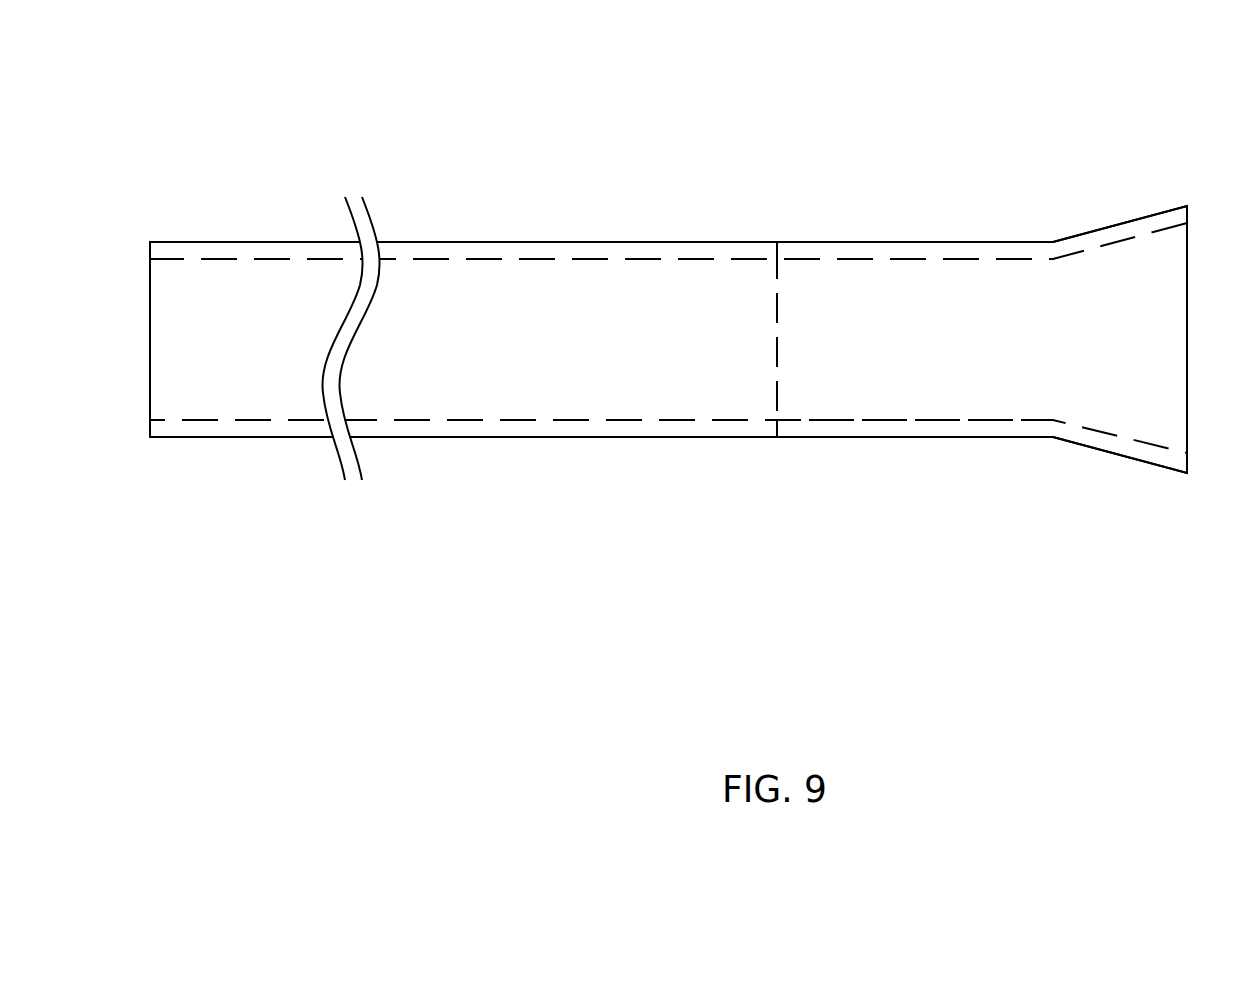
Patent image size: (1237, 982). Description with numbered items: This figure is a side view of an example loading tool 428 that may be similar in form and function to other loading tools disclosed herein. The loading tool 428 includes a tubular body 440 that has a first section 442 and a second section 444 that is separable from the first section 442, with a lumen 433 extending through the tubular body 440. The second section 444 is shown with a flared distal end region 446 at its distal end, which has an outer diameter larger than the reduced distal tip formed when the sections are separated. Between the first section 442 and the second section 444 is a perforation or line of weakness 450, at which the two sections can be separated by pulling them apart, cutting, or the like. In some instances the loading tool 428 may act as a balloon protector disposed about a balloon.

The loading tool 428 is at (720, 138).
The lumen 433 is at (932, 383).
The tubular body 440 is at (593, 242).
The first section 442 is at (438, 241).
The second section 444 is at (914, 241).
The flared distal end region 446 is at (1118, 222).
The perforation or line of weakness 450 is at (777, 379).